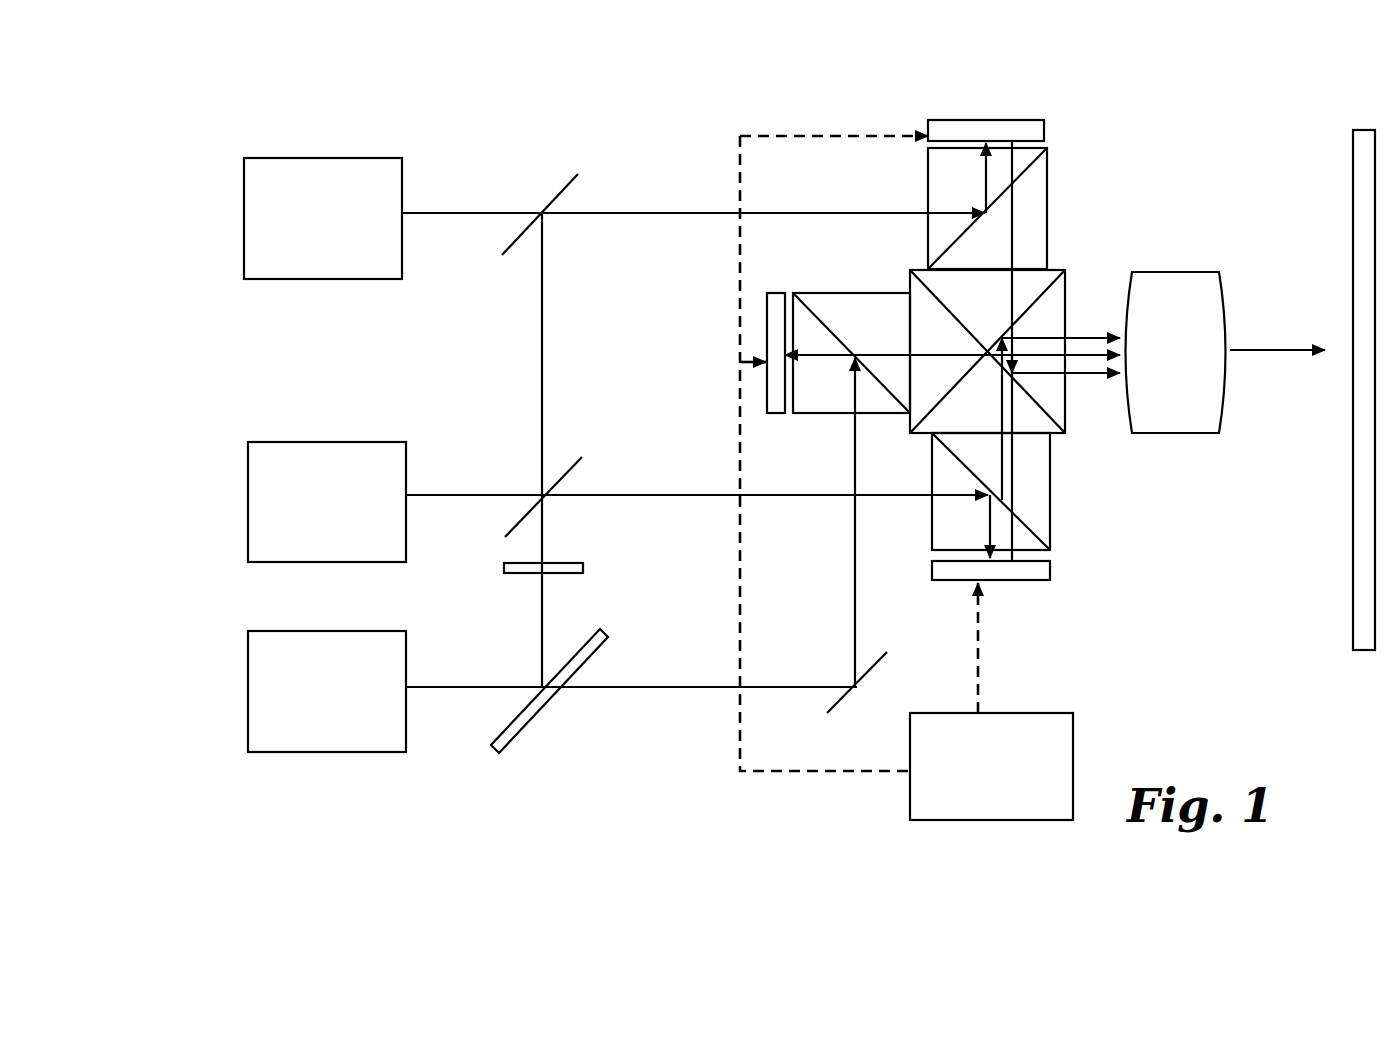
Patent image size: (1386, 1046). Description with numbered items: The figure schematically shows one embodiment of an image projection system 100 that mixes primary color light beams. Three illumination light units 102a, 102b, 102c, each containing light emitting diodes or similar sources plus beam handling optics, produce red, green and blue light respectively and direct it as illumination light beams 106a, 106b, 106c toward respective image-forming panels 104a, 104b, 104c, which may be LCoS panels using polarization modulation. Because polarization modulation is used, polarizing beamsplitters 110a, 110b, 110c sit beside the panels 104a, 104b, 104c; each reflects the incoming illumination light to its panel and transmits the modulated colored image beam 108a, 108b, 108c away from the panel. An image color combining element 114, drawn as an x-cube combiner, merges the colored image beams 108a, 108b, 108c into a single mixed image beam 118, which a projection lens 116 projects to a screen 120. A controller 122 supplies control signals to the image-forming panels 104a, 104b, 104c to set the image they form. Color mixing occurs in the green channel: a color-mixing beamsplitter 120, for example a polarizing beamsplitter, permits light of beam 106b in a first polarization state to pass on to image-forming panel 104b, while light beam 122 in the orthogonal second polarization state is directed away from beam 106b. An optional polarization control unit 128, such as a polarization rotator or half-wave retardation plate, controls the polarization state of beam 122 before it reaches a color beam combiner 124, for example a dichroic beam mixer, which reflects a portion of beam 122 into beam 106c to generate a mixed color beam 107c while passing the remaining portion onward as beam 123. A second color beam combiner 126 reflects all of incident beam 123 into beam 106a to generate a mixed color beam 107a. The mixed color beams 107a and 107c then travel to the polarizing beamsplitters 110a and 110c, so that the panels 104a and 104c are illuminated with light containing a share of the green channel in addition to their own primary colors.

The image projection system 100 is at (295, 78).
The illumination light unit 102a is at (244, 207).
The illumination light unit 102b is at (327, 631).
The illumination light unit 102c is at (325, 442).
The image-forming panel 104a is at (982, 120).
The image-forming panel 104b is at (765, 308).
The image-forming panel 104c is at (1023, 582).
The illumination light beam 106a is at (457, 213).
The illumination light beam 106b is at (652, 687).
The illumination light beam 106c is at (477, 495).
The mixed color beam 107a is at (642, 212).
The mixed color beam 107c is at (686, 495).
The colored image beam 108a is at (1013, 210).
The colored image beam 108b is at (823, 360).
The colored image beam 108c is at (1005, 472).
The polarizing beamsplitter 110a is at (928, 172).
The polarizing beamsplitter 110b is at (842, 292).
The polarizing beamsplitter 110c is at (1050, 533).
The image color combining element 114 is at (1062, 269).
The projection lens 116 is at (1182, 270).
The mixed image beam 118 is at (1266, 346).
The color-mixing beamsplitter 120 is at (517, 732).
The light beam 122 is at (542, 623).
The light beam 123 is at (542, 342).
The color beam combiner 124 is at (580, 460).
The color beam combiner 126 is at (570, 173).
The polarization control unit 128 is at (563, 563).